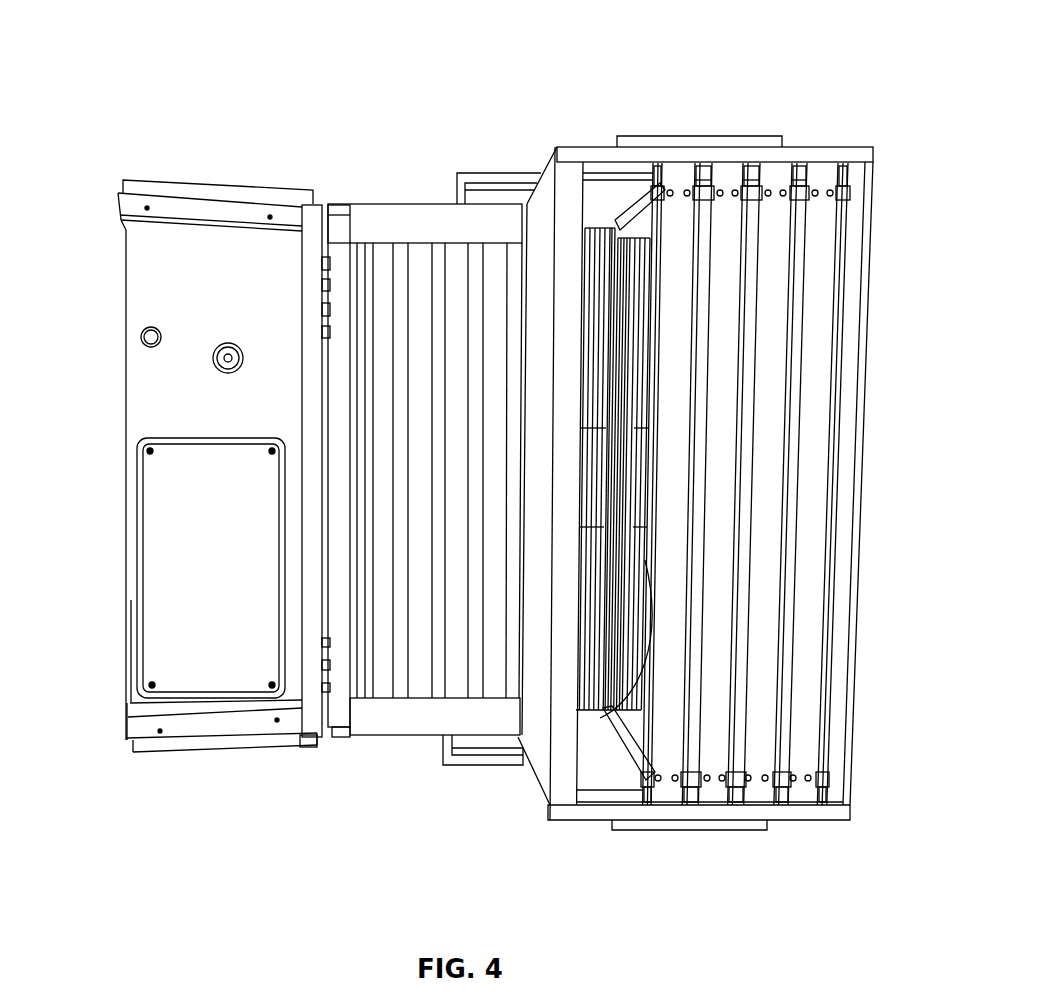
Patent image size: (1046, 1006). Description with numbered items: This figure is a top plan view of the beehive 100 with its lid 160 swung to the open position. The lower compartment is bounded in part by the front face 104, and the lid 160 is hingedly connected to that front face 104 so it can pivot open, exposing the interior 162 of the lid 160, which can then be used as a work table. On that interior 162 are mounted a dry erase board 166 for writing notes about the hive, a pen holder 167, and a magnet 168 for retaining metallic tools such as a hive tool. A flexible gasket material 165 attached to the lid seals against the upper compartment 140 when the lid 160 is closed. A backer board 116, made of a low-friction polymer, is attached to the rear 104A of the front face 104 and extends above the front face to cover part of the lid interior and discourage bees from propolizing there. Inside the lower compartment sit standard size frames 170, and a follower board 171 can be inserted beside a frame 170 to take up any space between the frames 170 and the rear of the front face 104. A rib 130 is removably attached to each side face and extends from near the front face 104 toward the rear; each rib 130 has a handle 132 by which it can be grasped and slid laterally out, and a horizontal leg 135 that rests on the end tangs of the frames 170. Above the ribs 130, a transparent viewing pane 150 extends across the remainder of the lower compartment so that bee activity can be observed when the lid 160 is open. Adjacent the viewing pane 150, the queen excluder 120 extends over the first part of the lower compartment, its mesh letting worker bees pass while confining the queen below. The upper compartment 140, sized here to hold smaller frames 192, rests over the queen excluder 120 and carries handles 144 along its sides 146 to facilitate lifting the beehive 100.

The beehive 100 is at (136, 55).
The front face 104 is at (337, 713).
The rear of the front face 104A is at (338, 472).
The backer board 116 is at (345, 356).
The queen excluder 120 is at (600, 718).
The rib 130 is at (360, 212).
The handle 132 is at (495, 177).
The horizontal leg 135 is at (457, 225).
The upper compartment 140 is at (577, 152).
The handles 144 is at (702, 136).
The sides of upper compartment 146 is at (815, 150).
The viewing pane 150 is at (422, 693).
The lid 160 is at (172, 203).
The interior of lid 162 is at (140, 270).
The flexible gasket material 165 is at (128, 656).
The dry erase board 166 is at (173, 673).
The pen holder 167 is at (140, 340).
The magnet 168 is at (218, 344).
The frames 170 is at (452, 255).
The follower board 171 is at (352, 258).
The smaller frames 192 is at (676, 178).